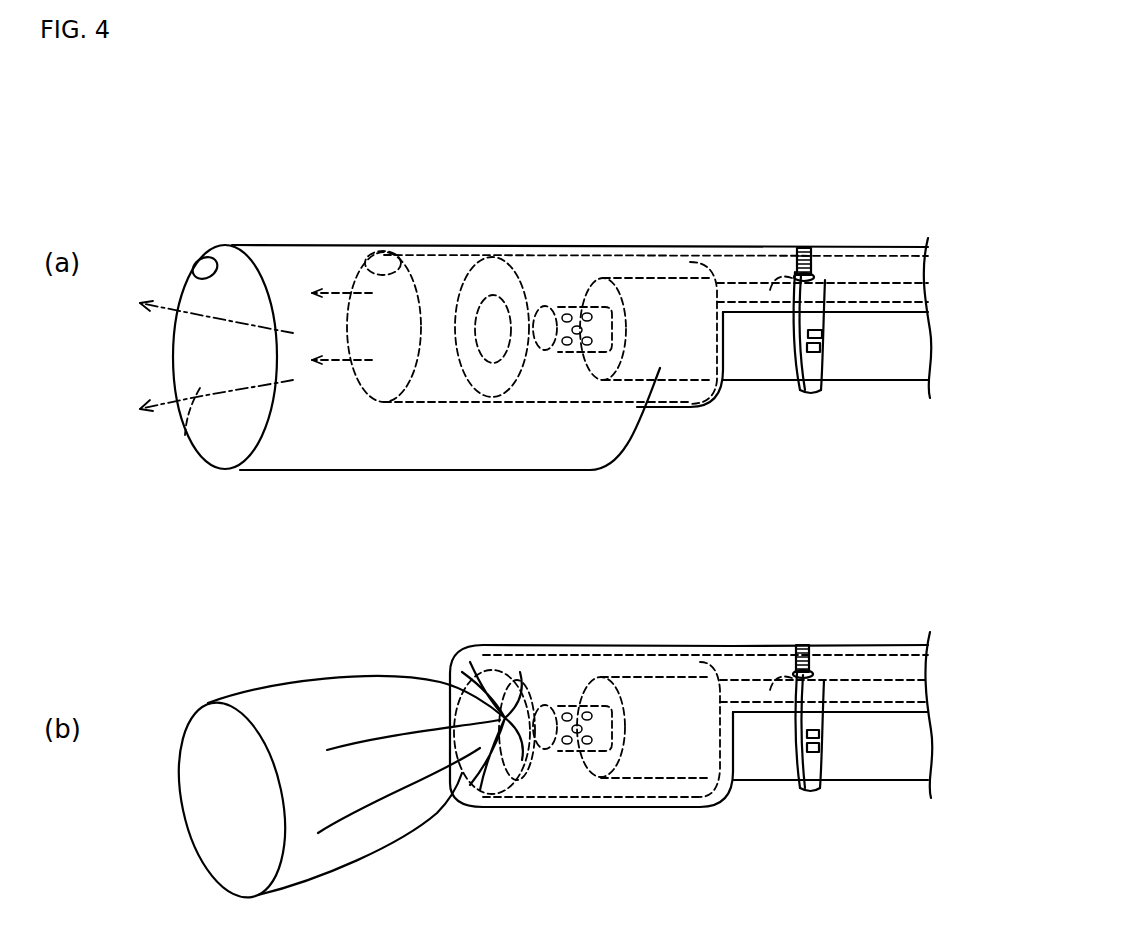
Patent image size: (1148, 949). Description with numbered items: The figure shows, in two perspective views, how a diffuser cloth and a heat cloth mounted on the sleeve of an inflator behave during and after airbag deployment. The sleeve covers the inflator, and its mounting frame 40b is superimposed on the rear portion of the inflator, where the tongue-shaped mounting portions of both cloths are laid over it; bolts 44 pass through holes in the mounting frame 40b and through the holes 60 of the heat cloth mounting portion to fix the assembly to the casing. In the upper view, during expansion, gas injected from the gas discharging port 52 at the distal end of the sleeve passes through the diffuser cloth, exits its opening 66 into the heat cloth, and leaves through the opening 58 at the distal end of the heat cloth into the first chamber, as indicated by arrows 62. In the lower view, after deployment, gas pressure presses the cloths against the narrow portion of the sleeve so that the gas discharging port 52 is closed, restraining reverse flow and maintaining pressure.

The mounting frame 40b is at (752, 277).
The bolt 44 is at (803, 247).
The gas discharging port 52 is at (488, 262).
The opening 58 is at (192, 278).
The holes 60 is at (812, 282).
The arrows 62 is at (185, 435).
The opening 66 is at (358, 267).